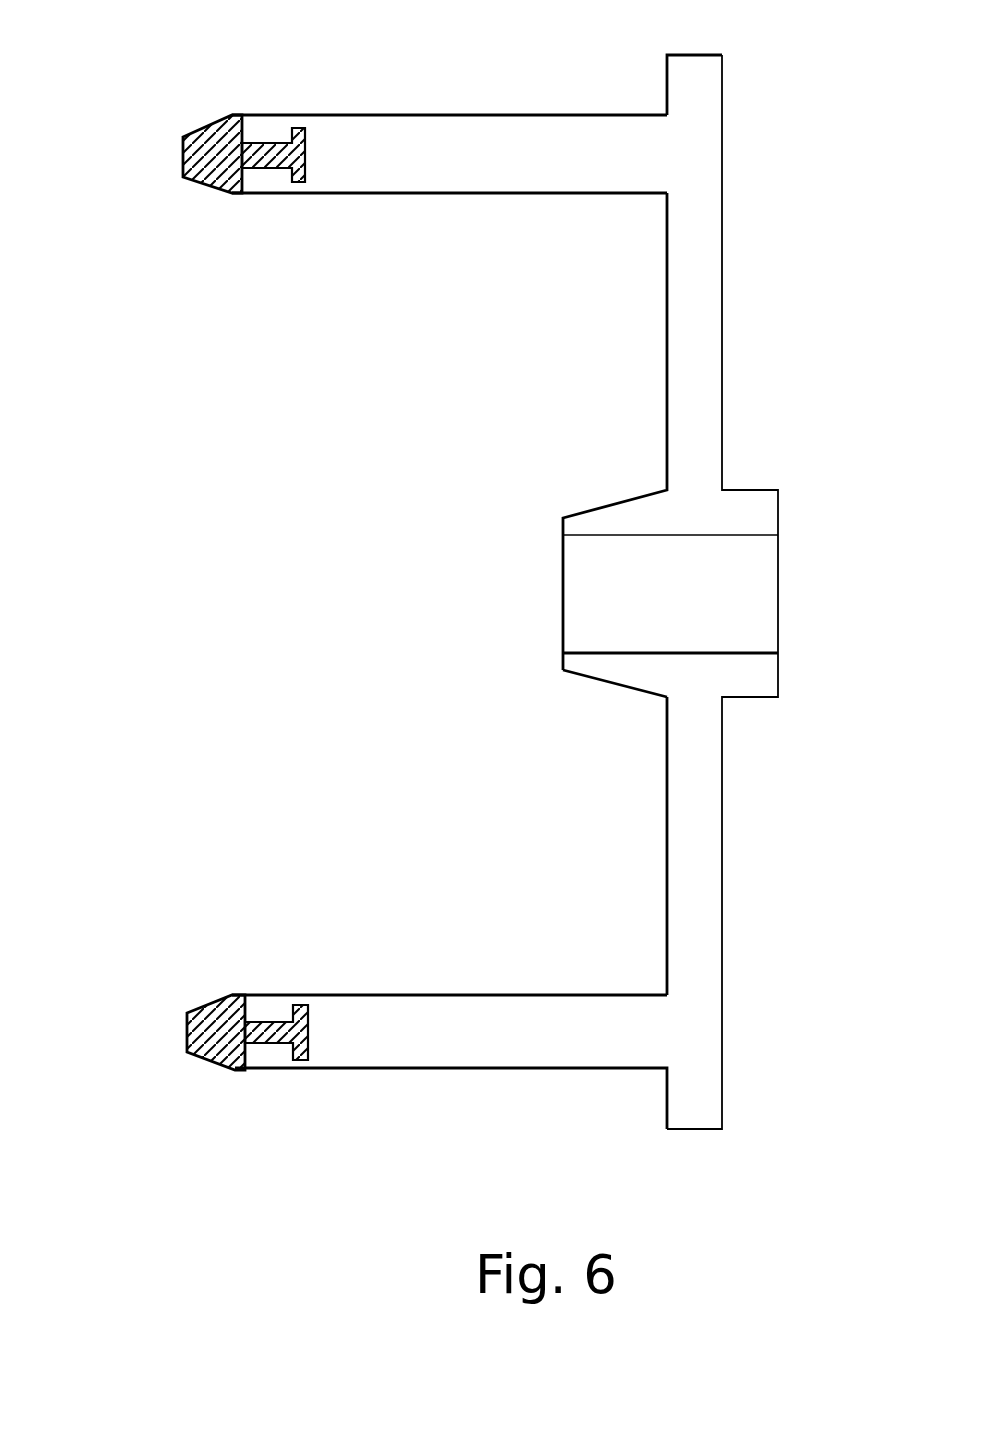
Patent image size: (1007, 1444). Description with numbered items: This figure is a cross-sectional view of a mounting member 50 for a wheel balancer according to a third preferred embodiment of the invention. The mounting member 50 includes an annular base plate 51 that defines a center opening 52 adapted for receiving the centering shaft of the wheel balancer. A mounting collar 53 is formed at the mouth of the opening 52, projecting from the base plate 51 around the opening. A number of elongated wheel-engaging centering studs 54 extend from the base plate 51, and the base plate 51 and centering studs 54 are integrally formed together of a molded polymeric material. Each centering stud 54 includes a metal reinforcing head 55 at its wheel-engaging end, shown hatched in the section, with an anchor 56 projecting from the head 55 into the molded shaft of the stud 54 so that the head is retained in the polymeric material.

The mounting member 50 is at (130, 151).
The annular base plate 51 is at (710, 377).
The center opening 52 is at (732, 537).
The mounting collar 53 is at (625, 673).
The centering stud 54 is at (498, 175).
The metal reinforcing head 55 is at (215, 170).
The anchor 56 is at (295, 180).